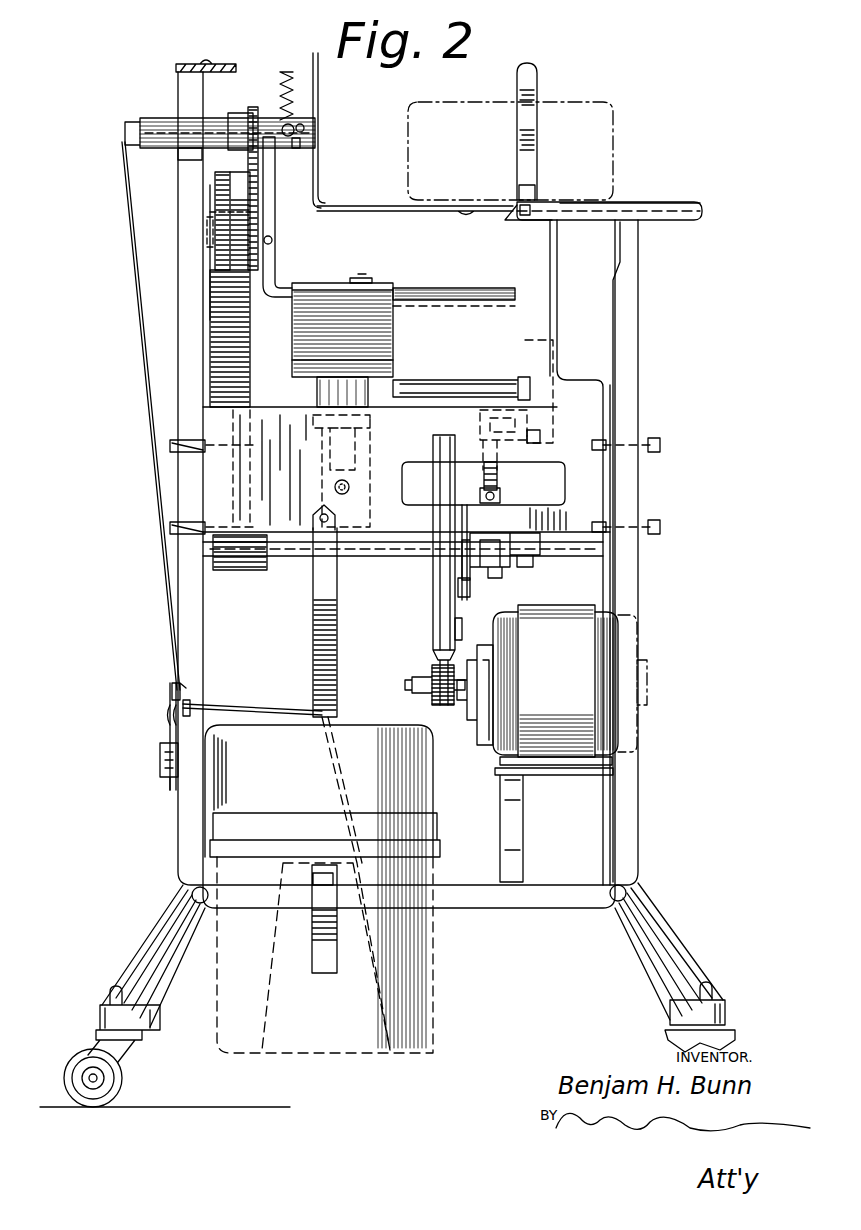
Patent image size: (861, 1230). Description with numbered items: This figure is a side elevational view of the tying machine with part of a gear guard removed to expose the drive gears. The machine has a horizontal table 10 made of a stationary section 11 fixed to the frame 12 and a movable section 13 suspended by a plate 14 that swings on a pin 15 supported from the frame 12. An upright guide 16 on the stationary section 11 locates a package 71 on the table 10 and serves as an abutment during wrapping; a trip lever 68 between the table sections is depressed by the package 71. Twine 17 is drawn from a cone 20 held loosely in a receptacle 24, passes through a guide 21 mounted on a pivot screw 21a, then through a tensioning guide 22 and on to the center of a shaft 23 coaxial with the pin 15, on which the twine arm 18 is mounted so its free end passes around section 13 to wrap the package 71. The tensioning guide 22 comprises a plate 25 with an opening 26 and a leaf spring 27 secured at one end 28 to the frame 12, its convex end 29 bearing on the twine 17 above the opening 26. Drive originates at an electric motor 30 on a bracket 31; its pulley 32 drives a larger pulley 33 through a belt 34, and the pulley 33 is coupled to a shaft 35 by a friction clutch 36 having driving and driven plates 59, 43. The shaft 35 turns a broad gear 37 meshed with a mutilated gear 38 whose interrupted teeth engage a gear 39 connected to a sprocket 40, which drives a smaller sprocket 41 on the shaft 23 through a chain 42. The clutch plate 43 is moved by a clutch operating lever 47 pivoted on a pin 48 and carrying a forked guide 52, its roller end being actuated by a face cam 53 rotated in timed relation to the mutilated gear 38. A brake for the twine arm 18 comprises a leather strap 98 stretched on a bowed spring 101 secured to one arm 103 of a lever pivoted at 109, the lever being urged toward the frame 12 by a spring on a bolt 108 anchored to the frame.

The horizontal table 10 is at (648, 202).
The stationary table section 11 is at (672, 204).
The frame 12 is at (178, 265).
The movable table section 13 is at (392, 205).
The plate 14 is at (318, 88).
The pin 15 is at (306, 130).
The upright guide 16 is at (538, 82).
The twine 17 is at (150, 470).
The twine arm 18 is at (436, 306).
The cone of twine 20 is at (340, 963).
The guide 21 is at (338, 692).
The pivot screw 21a is at (322, 512).
The tensioning guide 22 is at (162, 716).
The shaft 23 is at (133, 118).
The receptacle 24 is at (437, 1002).
The plate 25 is at (190, 710).
The opening 26 is at (185, 705).
The leaf spring 27 is at (172, 718).
The end of leaf spring 28 is at (172, 790).
The convexly curved end of leaf spring 29 is at (172, 692).
The electric motor 30 is at (568, 696).
The bracket 31 is at (574, 775).
The pulley 32 is at (437, 674).
The pulley 33 is at (433, 603).
The belt 34 is at (447, 628).
The shaft 35 is at (382, 556).
The friction clutch 36 is at (467, 592).
The broad gear 37 is at (248, 570).
The mutilated gear 38 is at (255, 343).
The gear 39 is at (215, 178).
The sprocket 40 is at (272, 243).
The smaller sprocket 41 is at (262, 92).
The chain 42 is at (276, 186).
The driven friction plate 43 is at (470, 583).
The clutch operating lever 47 is at (504, 478).
The pin 48 is at (500, 496).
The forked guide 52 is at (480, 412).
The face cam 53 is at (525, 348).
The driving friction plate 59 is at (466, 625).
The trip lever 68 is at (536, 190).
The package 71 is at (604, 92).
The leather strap 98 is at (372, 280).
The spring 101 is at (393, 360).
The arm of lever 103 is at (318, 395).
The bolt 108 is at (349, 490).
The pivot 109 is at (372, 420).